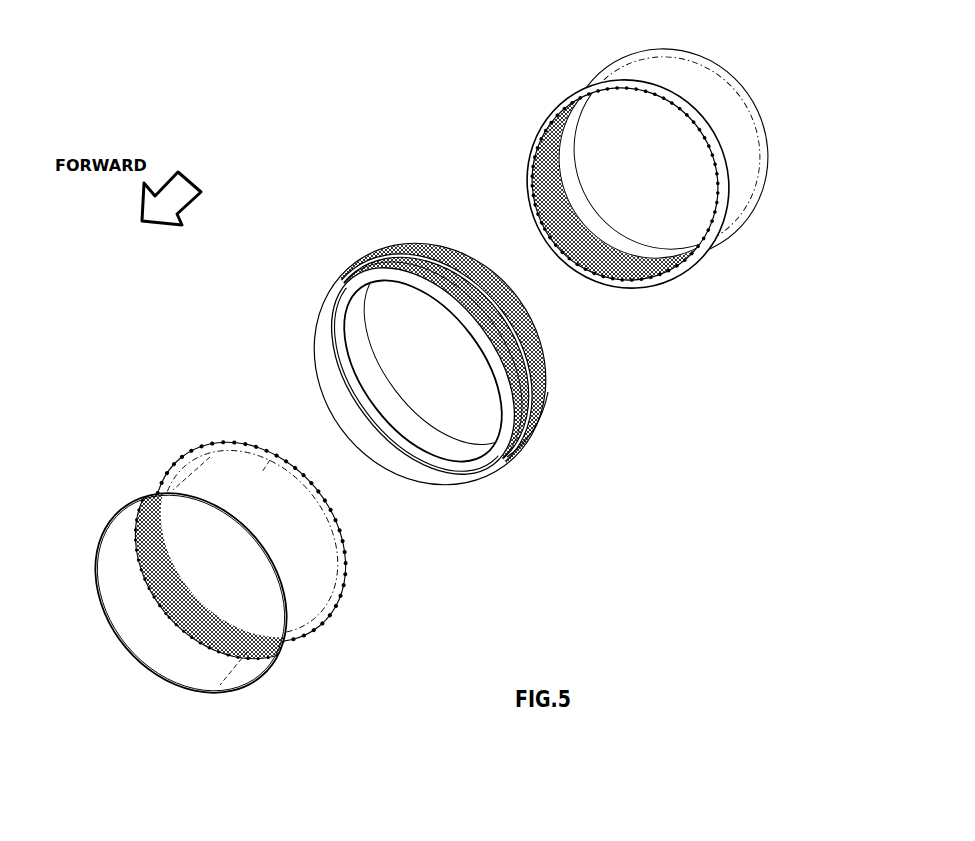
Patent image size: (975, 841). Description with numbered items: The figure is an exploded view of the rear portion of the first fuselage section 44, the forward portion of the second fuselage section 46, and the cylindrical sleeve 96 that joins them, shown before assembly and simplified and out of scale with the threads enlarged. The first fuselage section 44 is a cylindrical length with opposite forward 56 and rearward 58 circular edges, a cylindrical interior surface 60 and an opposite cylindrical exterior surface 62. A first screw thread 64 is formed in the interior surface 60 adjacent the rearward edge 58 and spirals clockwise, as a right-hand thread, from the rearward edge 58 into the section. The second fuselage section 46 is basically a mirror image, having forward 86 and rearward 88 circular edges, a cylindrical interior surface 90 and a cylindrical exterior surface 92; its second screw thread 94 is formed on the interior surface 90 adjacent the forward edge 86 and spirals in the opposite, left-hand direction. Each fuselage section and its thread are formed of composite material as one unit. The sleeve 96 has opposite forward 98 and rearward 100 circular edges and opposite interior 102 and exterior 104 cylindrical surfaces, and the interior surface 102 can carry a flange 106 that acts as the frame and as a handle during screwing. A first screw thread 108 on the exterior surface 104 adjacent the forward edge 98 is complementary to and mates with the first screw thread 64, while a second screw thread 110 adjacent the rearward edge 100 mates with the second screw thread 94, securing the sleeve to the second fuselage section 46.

The first fuselage section 44 is at (197, 413).
The second fuselage section 46 is at (622, 37).
The forward edge 56 is at (120, 628).
The rearward edge 58 is at (340, 550).
The interior surface 60 is at (127, 580).
The exterior surface 62 is at (300, 573).
The first screw thread 64 is at (190, 612).
The forward edge 86 is at (630, 285).
The rearward edge 88 is at (747, 110).
The interior surface 90 is at (668, 250).
The exterior surface 92 is at (737, 180).
The second screw thread 94 is at (597, 250).
The cylindrical sleeve 96 is at (403, 217).
The forward edge 98 is at (440, 488).
The rearward edge 100 is at (552, 383).
The interior surface 102 is at (402, 462).
The exterior surface 104 is at (518, 450).
The flange 106 is at (338, 338).
The first screw thread 108 is at (438, 290).
The second screw thread 110 is at (478, 290).